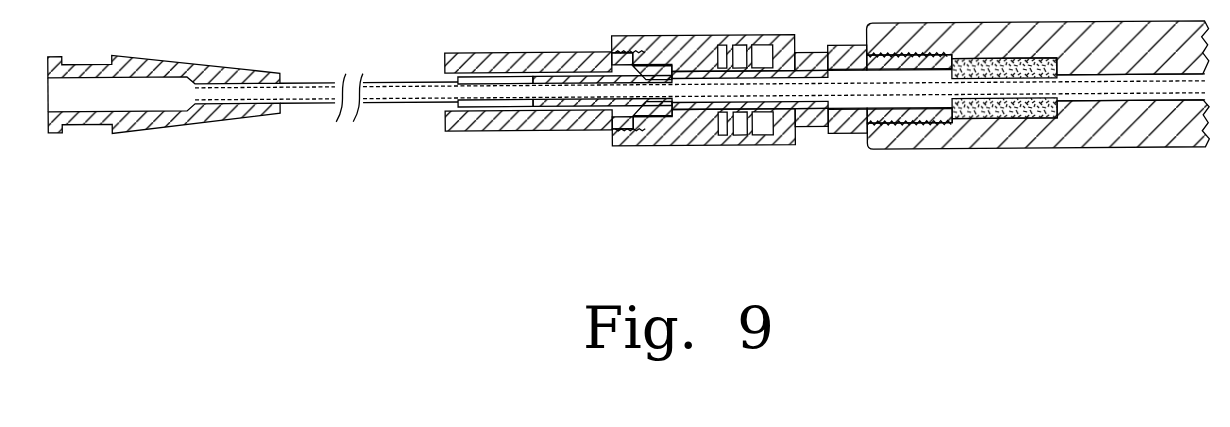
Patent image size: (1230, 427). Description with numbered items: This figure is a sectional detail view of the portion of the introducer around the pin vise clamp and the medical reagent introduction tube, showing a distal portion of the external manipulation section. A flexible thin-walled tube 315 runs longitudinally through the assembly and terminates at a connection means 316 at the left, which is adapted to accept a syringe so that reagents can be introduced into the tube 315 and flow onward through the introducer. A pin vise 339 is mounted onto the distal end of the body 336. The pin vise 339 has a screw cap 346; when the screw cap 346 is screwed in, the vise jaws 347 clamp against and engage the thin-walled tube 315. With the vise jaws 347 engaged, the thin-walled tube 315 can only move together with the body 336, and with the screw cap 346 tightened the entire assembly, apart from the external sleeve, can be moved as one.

The thin-walled tube 315 is at (407, 103).
The connection means 316 is at (178, 120).
The body 336 is at (1033, 150).
The pin vise 339 is at (760, 162).
The screw cap 346 is at (510, 128).
The vise jaws 347 is at (660, 112).